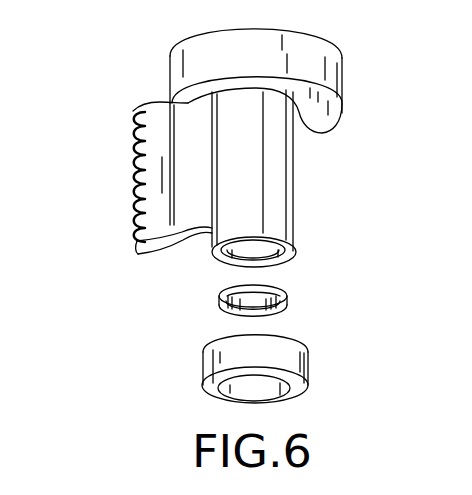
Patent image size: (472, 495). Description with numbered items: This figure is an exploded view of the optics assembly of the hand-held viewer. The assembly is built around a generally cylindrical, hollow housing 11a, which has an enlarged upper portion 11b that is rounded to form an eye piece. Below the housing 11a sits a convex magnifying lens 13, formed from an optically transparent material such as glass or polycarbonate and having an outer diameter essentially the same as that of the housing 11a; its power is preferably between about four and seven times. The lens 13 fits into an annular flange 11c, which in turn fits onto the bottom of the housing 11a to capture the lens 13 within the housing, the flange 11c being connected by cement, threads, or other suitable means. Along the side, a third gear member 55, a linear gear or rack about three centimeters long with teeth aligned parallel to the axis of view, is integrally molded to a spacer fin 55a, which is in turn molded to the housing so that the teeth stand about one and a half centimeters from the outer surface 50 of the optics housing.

The housing 11a is at (282, 187).
The enlarged upper portion 11b is at (308, 50).
The annular flange 11c is at (308, 357).
The lens 13 is at (285, 299).
The outer surface 50 is at (211, 237).
The third gear member 55 is at (122, 181).
The spacer fin 55a is at (166, 116).